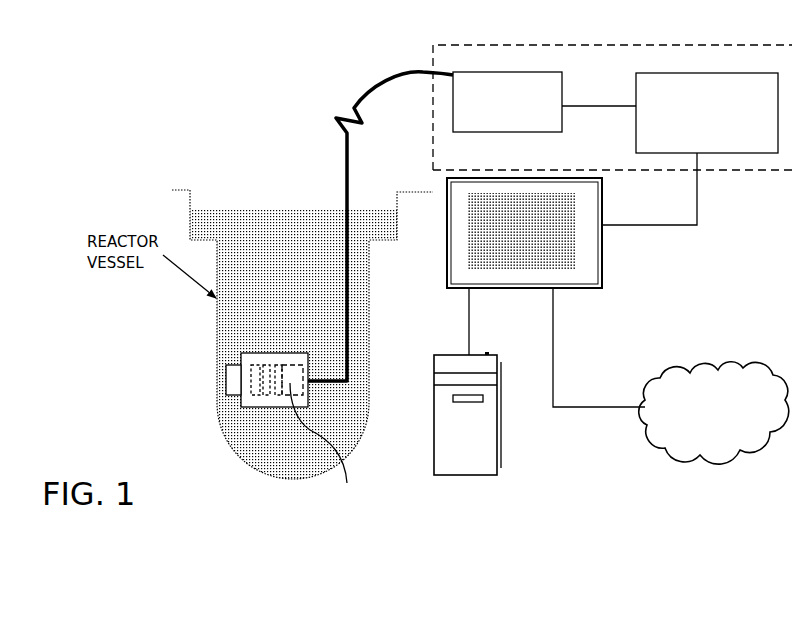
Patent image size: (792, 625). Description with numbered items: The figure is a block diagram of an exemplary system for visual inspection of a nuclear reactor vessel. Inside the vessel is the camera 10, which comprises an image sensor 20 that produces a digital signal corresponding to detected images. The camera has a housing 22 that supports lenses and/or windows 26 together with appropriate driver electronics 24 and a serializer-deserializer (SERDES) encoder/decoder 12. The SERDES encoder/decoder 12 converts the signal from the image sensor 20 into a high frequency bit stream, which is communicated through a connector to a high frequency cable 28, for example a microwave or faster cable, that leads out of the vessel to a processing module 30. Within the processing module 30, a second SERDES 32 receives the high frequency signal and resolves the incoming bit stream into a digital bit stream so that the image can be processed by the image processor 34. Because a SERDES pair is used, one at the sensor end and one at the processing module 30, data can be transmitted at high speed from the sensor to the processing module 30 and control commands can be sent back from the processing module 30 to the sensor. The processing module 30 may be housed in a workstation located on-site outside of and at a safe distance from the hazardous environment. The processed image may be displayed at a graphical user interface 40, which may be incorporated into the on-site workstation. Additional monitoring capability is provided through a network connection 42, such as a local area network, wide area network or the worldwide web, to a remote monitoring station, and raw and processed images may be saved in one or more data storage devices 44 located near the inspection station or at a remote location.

The camera 10 is at (230, 408).
The SERDES encoder/decoder 12 is at (328, 447).
The image sensor 20 is at (257, 370).
The housing 22 is at (280, 405).
The driver electronics 24 is at (270, 370).
The lenses and/or windows 26 is at (233, 383).
The high frequency cable 28 is at (345, 165).
The processing module 30 is at (763, 174).
The second SERDES 32 is at (507, 102).
The image processor 34 is at (707, 113).
The graphical user interface 40 is at (562, 255).
The network connection 42 is at (714, 413).
The data storage device 44 is at (483, 453).